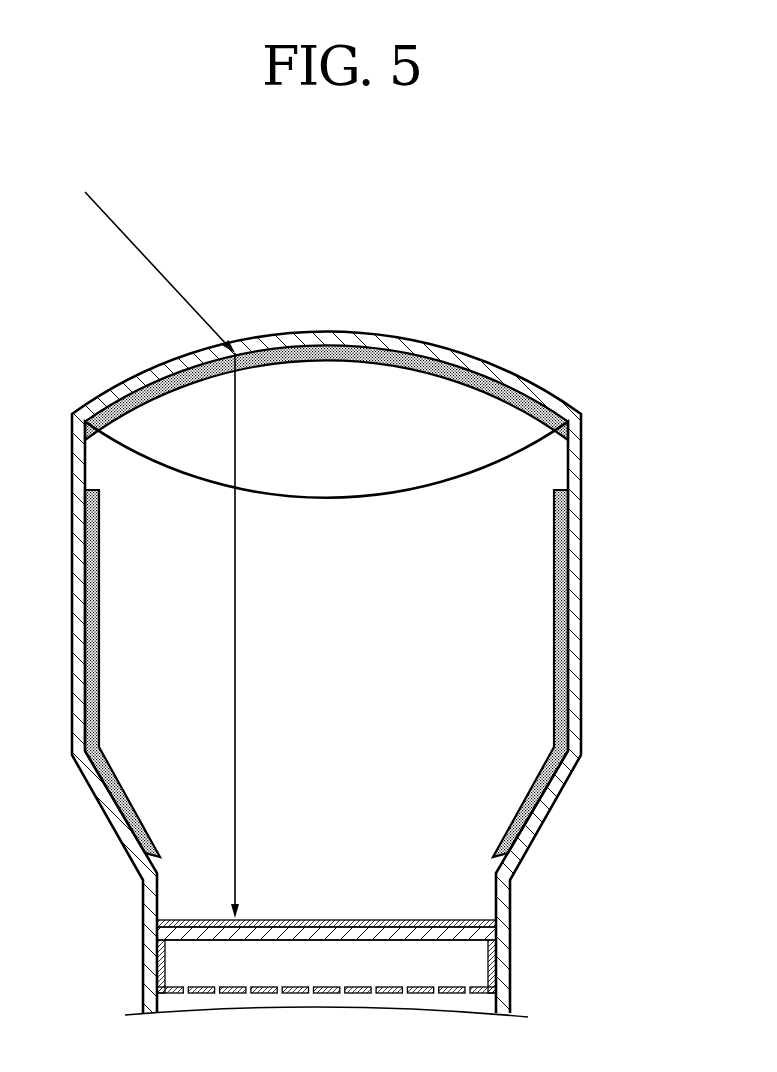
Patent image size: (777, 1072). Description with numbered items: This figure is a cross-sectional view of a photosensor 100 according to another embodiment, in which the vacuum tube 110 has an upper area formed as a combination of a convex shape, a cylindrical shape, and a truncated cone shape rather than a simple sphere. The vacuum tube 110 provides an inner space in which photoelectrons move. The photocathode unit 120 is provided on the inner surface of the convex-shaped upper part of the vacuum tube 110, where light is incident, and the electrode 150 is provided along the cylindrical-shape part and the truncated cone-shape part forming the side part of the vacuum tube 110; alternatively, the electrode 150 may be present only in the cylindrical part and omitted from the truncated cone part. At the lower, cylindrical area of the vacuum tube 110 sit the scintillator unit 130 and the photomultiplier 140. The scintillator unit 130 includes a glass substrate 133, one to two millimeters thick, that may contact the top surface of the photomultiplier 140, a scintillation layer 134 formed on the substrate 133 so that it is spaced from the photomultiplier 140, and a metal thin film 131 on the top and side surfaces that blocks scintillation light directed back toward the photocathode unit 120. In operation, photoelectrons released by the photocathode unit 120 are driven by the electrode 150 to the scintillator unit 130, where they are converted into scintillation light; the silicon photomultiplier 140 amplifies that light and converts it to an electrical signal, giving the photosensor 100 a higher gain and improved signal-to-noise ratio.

The photosensor 100 is at (491, 222).
The vacuum tube 110 is at (572, 689).
The photocathode unit 120 is at (399, 354).
The scintillator unit 130 is at (411, 938).
The metal thin film 131 is at (465, 919).
The substrate 133 is at (382, 966).
The scintillation layer 134 is at (485, 928).
The photomultiplier 140 is at (455, 992).
The electrode 150 is at (560, 587).